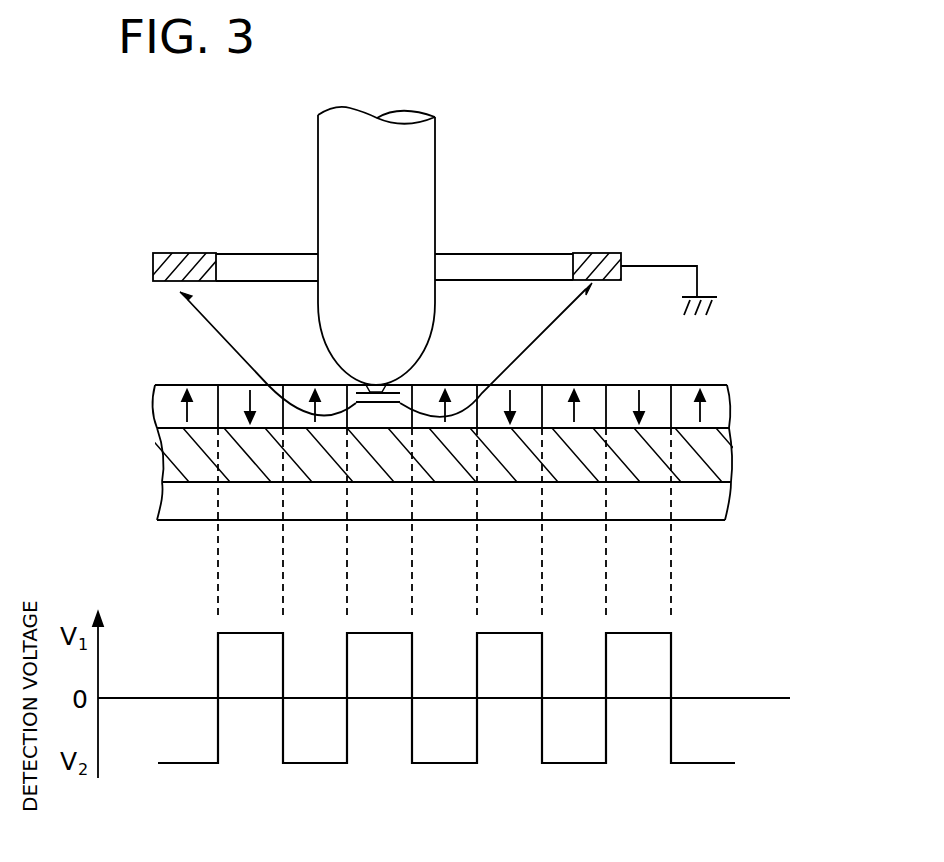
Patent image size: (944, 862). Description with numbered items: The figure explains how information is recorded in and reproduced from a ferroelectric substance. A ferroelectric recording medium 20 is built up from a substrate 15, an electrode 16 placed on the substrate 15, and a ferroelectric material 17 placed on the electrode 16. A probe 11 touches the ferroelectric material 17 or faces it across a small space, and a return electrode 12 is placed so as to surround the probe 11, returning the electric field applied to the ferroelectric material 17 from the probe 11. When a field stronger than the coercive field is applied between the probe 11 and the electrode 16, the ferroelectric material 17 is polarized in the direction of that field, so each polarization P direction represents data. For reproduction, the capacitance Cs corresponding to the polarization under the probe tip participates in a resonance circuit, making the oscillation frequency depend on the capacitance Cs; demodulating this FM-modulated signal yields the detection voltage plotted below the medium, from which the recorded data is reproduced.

The probe 11 is at (436, 190).
The return electrode 12 is at (595, 253).
The capacitance Cs is at (405, 392).
The polarization P is at (722, 390).
The ferroelectric recording medium 20 is at (488, 452).
The ferroelectric material 17 is at (724, 406).
The electrode 16 is at (726, 452).
The substrate 15 is at (480, 501).